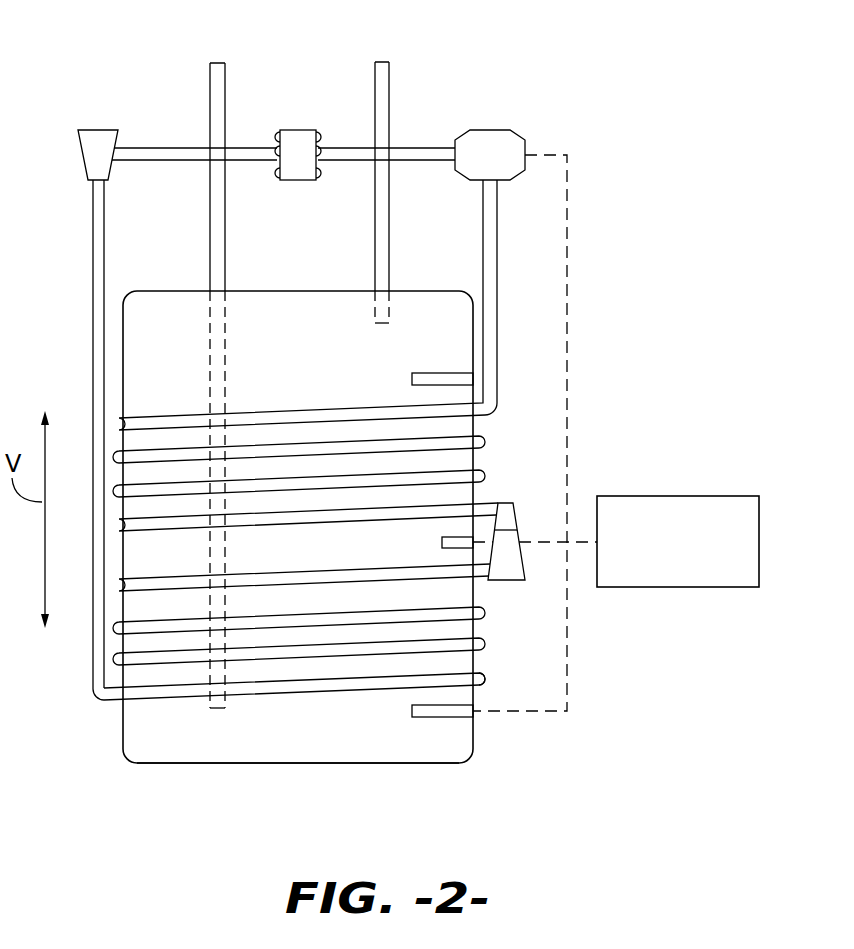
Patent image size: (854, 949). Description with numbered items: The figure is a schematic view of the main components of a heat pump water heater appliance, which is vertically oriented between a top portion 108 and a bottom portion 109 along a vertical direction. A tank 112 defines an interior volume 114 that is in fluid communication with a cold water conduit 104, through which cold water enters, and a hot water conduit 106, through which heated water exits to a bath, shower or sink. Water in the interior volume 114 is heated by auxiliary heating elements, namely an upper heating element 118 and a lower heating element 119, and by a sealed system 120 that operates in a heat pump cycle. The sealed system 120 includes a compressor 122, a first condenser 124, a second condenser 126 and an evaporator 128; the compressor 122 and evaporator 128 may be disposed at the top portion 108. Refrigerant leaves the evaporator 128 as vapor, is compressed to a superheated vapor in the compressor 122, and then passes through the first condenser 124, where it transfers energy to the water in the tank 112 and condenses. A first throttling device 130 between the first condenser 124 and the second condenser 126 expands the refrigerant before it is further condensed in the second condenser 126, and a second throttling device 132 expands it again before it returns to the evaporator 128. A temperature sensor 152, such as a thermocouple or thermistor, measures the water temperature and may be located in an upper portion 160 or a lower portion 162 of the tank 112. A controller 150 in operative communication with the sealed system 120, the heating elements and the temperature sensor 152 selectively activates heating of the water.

The cold water conduit 104 is at (210, 95).
The hot water conduit 106 is at (375, 93).
The top portion 108 is at (120, 280).
The bottom portion 109 is at (118, 772).
The tank 112 is at (482, 457).
The interior volume 114 is at (268, 319).
The upper heating element 118 is at (412, 379).
The lower heating element 119 is at (412, 710).
The sealed system 120 is at (595, 36).
The compressor 122 is at (488, 129).
The first condenser 124 is at (345, 409).
The second condenser 126 is at (317, 696).
The evaporator 128 is at (298, 129).
The first throttling device 130 is at (537, 492).
The second throttling device 132 is at (88, 142).
The controller 150 is at (660, 566).
The temperature sensor 152 is at (442, 542).
The upper portion 160 is at (108, 372).
The lower portion 162 is at (490, 692).